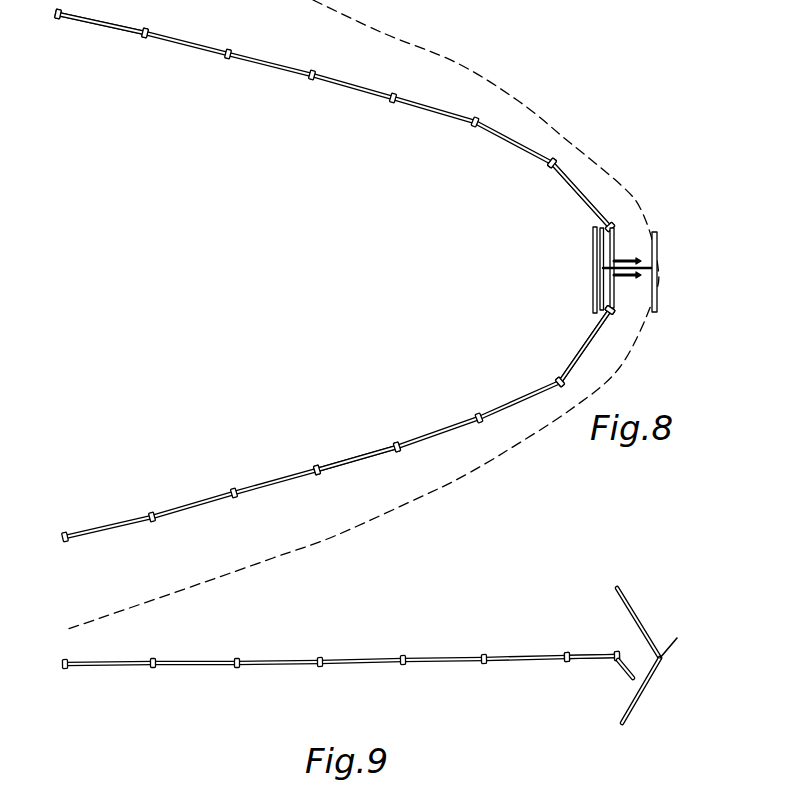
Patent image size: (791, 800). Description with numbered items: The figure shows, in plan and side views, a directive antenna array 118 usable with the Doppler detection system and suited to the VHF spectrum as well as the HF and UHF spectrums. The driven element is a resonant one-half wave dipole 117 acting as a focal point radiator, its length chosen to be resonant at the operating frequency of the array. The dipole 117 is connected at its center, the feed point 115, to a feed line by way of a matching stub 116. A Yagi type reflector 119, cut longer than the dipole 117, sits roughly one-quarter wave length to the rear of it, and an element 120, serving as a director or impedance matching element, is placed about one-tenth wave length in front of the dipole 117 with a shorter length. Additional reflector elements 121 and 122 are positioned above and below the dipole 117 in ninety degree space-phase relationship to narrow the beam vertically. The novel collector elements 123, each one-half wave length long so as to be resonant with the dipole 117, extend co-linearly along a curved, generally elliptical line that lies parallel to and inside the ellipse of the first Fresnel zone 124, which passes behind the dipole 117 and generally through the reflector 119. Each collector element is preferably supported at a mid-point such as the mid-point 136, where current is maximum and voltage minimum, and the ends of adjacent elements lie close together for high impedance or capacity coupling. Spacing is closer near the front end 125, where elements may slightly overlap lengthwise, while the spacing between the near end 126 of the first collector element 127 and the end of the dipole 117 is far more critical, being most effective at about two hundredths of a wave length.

In FIG. 8, the feed point 115 is at (614, 262).
In FIG. 8, the matching stub 116 is at (616, 278).
In FIG. 9, the matching stub 116 is at (625, 677).
In FIG. 8, the dipole 117 is at (613, 240).
In FIG. 9, the dipole 117 is at (617, 655).
In FIG. 8, the antenna array 118 is at (417, 107).
In FIG. 8, the reflector 119 is at (658, 237).
In FIG. 9, the reflector 119 is at (677, 638).
In FIG. 8, the element 120 is at (593, 248).
In FIG. 8, the reflector element 121 is at (602, 287).
In FIG. 9, the reflector element 121 is at (620, 588).
In FIG. 9, the reflector element 122 is at (620, 725).
In FIG. 8, the collector elements 123 is at (90, 527).
In FIG. 9, the collector elements 123 is at (513, 657).
In FIG. 8, the first Fresnel zone 124 is at (540, 110).
In FIG. 8, the front end 125 is at (100, 27).
In FIG. 8, the near end 126 is at (602, 318).
In FIG. 8, the first collector element 127 is at (573, 360).
In FIG. 8, the mid-point 136 is at (353, 460).